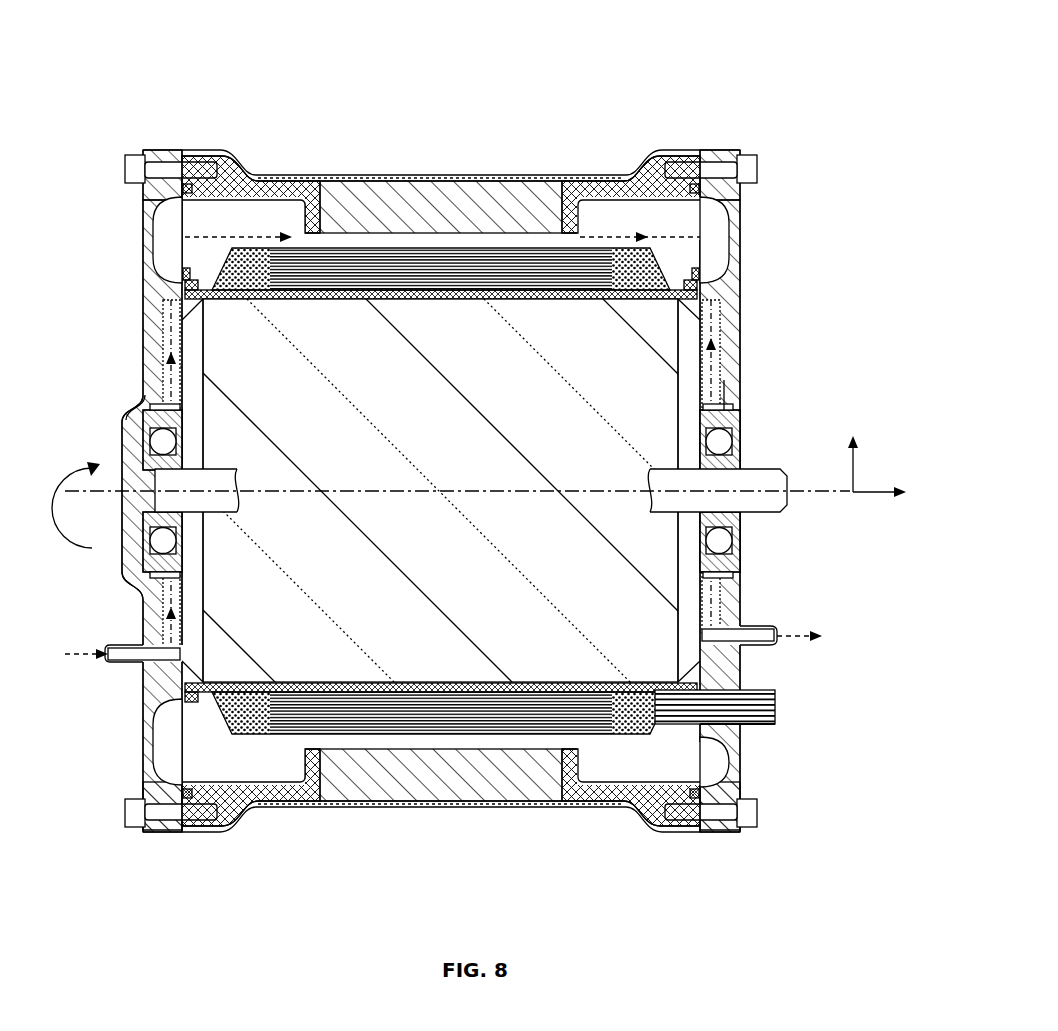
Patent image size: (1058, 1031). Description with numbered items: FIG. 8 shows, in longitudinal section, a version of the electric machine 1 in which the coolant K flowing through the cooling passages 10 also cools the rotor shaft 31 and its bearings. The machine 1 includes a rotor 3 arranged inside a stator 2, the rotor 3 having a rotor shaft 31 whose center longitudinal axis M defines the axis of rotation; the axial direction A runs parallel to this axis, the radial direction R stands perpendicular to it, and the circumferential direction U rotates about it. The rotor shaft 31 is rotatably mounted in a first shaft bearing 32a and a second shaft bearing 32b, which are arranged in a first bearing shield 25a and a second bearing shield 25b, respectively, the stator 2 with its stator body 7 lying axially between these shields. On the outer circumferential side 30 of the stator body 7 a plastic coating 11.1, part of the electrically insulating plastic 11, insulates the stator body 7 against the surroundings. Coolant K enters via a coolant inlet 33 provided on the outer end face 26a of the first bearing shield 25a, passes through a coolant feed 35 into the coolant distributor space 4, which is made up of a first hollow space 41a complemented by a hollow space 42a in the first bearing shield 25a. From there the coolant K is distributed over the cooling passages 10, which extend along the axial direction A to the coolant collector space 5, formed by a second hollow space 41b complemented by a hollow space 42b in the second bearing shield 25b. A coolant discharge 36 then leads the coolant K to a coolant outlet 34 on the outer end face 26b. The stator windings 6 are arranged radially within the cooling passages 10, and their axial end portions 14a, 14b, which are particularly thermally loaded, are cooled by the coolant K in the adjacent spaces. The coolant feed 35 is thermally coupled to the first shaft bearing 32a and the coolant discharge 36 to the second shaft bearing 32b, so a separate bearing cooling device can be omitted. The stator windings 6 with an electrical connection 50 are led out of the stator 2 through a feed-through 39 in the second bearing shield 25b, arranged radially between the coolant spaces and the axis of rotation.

The electric machine 1 is at (851, 140).
The stator 2 is at (521, 166).
The rotor 3 is at (435, 452).
The coolant distributor space 4 is at (217, 225).
The coolant collector space 5 is at (685, 227).
The stator winding 6 is at (500, 308).
The stator body 7 is at (433, 167).
The cooling passage 10 is at (340, 232).
The electrically insulating plastic 11 is at (289, 178).
The plastic coating 11.1 is at (481, 176).
The first axial end portion of the stator winding 14a is at (212, 272).
The second axial end portion of the stator winding 14b is at (672, 272).
The first bearing shield 25a is at (138, 333).
The second bearing shield 25b is at (747, 332).
The outer end face of the first bearing shield 26a is at (143, 380).
The outer end face of the second bearing shield 26b is at (740, 380).
The outer circumferential side of the stator body 30 is at (390, 176).
The rotor shaft 31 is at (762, 503).
The first shaft bearing 32a is at (143, 425).
The second shaft bearing 32b is at (740, 425).
The coolant inlet 33 is at (116, 665).
The coolant outlet 34 is at (780, 650).
The coolant feed 35 is at (186, 284).
The coolant discharge 36 is at (712, 300).
The feed-through 39 is at (760, 727).
The first hollow space 41a is at (249, 215).
The second hollow space 41b is at (656, 205).
The hollow space in the first bearing shield 42a is at (160, 232).
The hollow space in the second bearing shield 42b is at (715, 235).
The electrical connection 50 is at (777, 705).
The circumferential direction U is at (82, 550).
The radial direction R is at (868, 455).
The axial direction A is at (870, 500).
The center longitudinal axis M is at (808, 497).
The coolant K is at (66, 665).